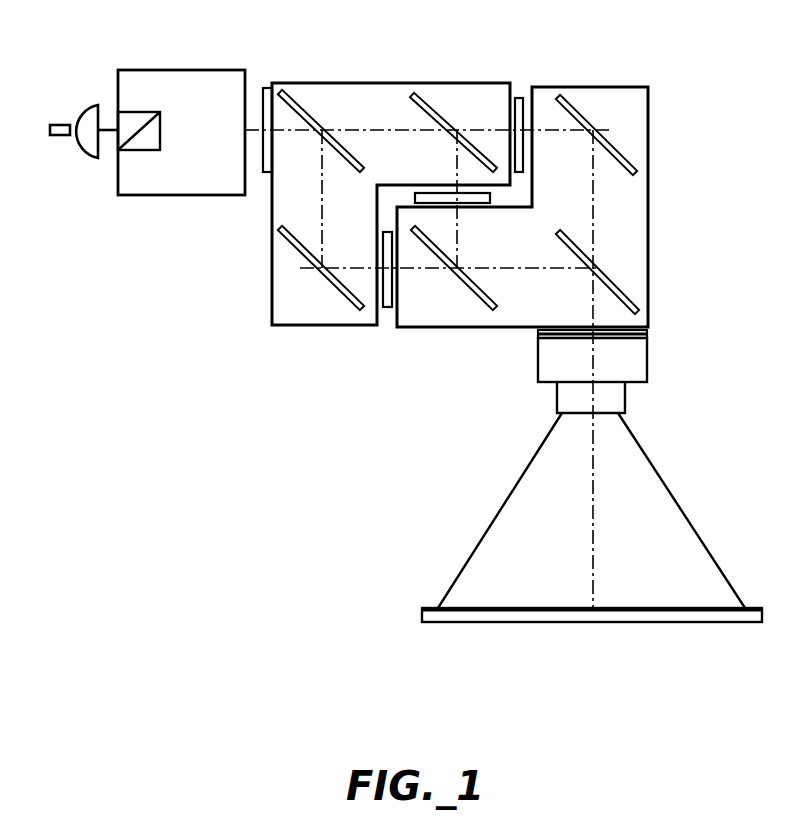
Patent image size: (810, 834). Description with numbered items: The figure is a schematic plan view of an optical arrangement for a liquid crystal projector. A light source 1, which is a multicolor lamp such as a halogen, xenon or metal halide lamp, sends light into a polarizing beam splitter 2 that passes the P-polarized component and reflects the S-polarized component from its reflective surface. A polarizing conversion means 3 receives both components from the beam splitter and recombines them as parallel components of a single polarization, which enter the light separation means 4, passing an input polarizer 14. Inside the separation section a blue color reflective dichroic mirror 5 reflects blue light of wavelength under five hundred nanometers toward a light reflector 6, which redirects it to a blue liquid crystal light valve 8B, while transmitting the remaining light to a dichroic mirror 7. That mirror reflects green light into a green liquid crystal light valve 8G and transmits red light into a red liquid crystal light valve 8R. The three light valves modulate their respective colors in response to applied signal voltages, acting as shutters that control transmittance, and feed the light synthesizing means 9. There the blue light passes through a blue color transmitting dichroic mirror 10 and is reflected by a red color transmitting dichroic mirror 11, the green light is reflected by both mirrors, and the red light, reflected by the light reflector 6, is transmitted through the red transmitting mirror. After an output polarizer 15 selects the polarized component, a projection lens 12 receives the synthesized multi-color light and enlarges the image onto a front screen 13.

The light source 1 is at (82, 122).
The polarizing beam splitter 2 is at (132, 112).
The polarizing conversion means 3 is at (163, 197).
The light separation means 4 is at (355, 90).
The blue color reflective dichroic mirror 5 is at (293, 92).
The light reflector 6 is at (613, 144).
The dichroic mirror 7 is at (427, 88).
The red liquid crystal light valve 8R is at (520, 98).
The green liquid crystal light valve 8G is at (438, 203).
The blue liquid crystal light valve 8B is at (387, 308).
The light synthesizing means 9 is at (577, 90).
The blue color transmitting dichroic mirror 10 is at (487, 310).
The red color transmitting dichroic mirror 11 is at (617, 280).
The projection lens 12 is at (638, 370).
The front screen 13 is at (420, 608).
The input polarizer 14 is at (268, 88).
The output polarizer 15 is at (650, 327).